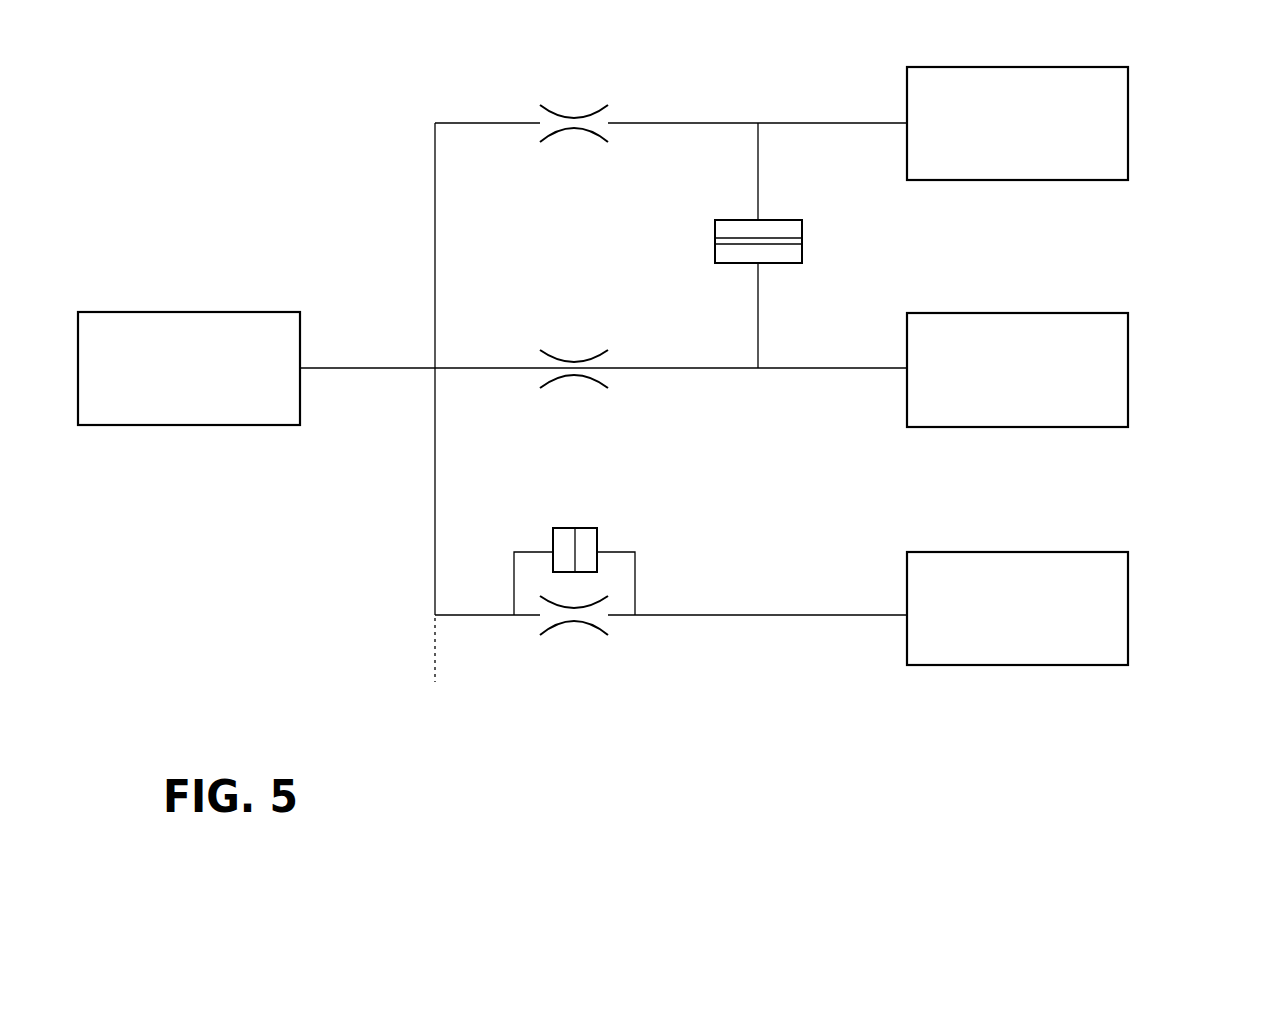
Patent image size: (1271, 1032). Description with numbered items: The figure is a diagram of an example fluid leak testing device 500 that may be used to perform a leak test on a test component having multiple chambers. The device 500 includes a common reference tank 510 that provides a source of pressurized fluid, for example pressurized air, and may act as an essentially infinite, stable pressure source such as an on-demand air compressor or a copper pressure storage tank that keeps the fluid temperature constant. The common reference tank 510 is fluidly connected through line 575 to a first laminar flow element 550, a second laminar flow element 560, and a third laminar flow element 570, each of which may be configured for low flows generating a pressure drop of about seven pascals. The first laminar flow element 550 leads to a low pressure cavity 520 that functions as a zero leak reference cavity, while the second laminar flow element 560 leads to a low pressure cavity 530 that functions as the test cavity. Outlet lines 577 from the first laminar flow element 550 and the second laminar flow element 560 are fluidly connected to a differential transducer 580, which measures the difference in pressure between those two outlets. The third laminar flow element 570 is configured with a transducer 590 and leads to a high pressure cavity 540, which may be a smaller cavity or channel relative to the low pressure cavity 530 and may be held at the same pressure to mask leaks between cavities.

The fluid leak testing device 500 is at (293, 140).
The common reference tank 510 is at (183, 312).
The low pressure cavity 520 is at (1128, 113).
The low pressure cavity 530 is at (1128, 367).
The high pressure cavity 540 is at (1128, 602).
The first laminar flow element 550 is at (575, 118).
The second laminar flow element 560 is at (575, 362).
The third laminar flow element 570 is at (578, 622).
The line 575 is at (435, 258).
The outlet lines 577 is at (758, 322).
The differential transducer 580 is at (771, 220).
The transducer 590 is at (597, 538).